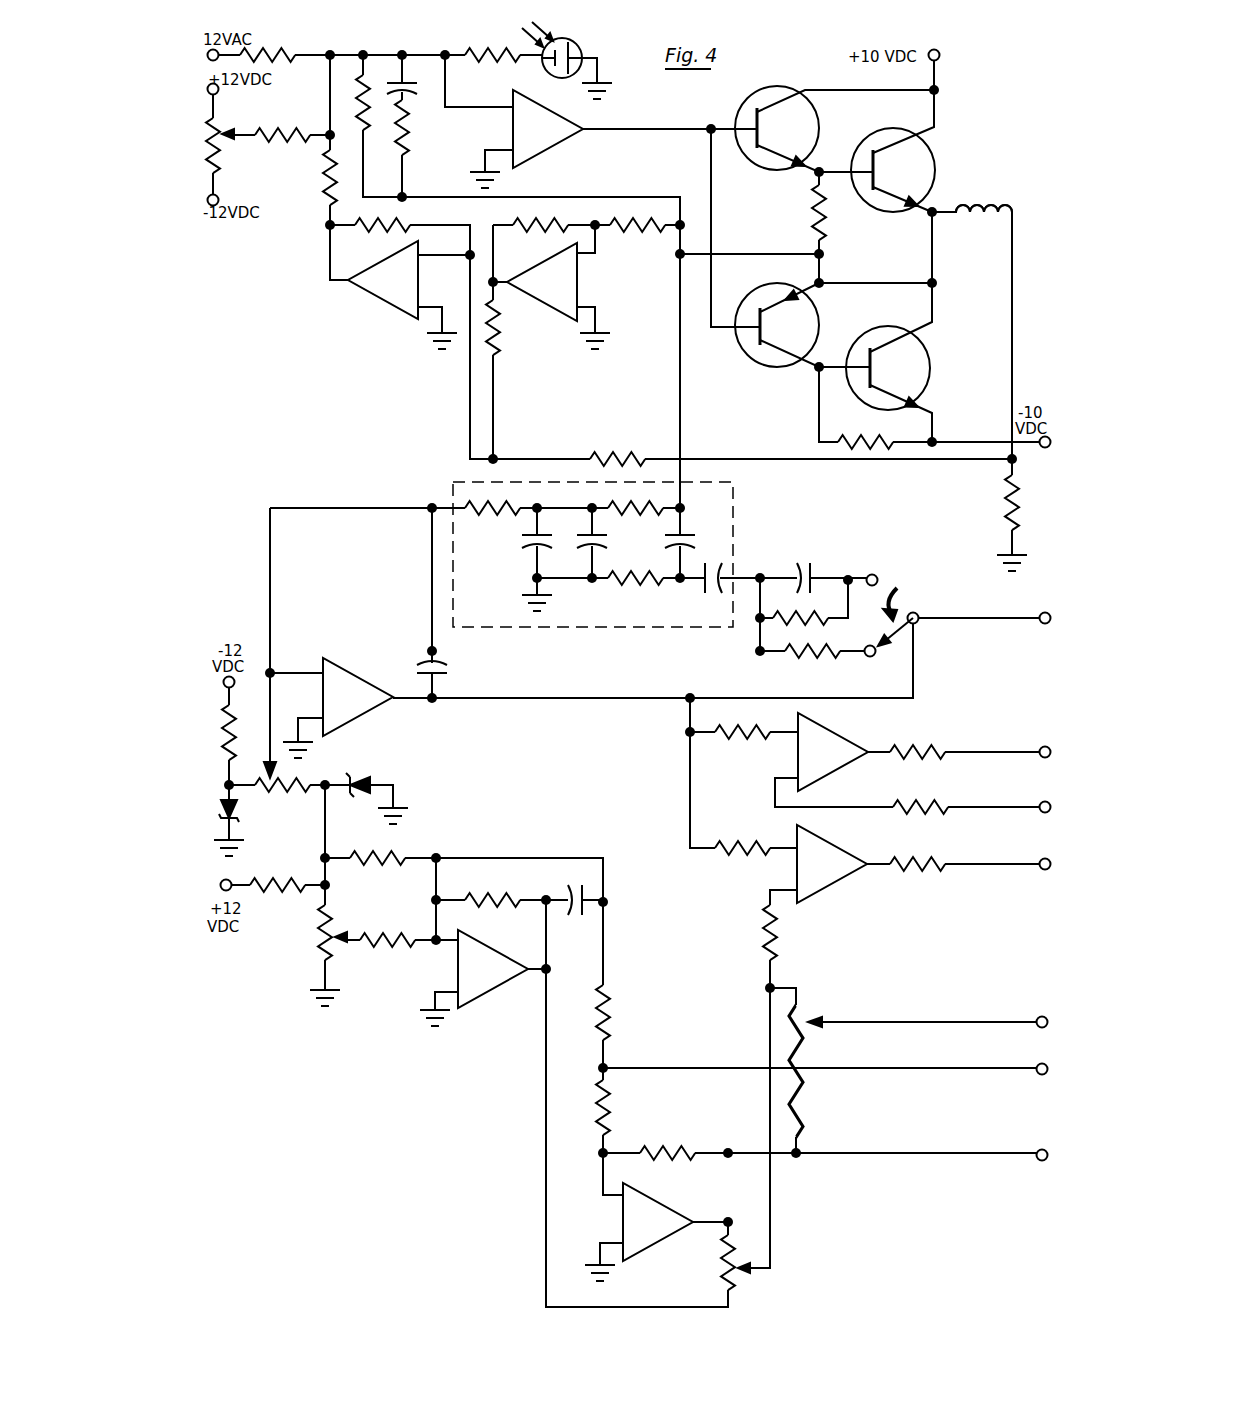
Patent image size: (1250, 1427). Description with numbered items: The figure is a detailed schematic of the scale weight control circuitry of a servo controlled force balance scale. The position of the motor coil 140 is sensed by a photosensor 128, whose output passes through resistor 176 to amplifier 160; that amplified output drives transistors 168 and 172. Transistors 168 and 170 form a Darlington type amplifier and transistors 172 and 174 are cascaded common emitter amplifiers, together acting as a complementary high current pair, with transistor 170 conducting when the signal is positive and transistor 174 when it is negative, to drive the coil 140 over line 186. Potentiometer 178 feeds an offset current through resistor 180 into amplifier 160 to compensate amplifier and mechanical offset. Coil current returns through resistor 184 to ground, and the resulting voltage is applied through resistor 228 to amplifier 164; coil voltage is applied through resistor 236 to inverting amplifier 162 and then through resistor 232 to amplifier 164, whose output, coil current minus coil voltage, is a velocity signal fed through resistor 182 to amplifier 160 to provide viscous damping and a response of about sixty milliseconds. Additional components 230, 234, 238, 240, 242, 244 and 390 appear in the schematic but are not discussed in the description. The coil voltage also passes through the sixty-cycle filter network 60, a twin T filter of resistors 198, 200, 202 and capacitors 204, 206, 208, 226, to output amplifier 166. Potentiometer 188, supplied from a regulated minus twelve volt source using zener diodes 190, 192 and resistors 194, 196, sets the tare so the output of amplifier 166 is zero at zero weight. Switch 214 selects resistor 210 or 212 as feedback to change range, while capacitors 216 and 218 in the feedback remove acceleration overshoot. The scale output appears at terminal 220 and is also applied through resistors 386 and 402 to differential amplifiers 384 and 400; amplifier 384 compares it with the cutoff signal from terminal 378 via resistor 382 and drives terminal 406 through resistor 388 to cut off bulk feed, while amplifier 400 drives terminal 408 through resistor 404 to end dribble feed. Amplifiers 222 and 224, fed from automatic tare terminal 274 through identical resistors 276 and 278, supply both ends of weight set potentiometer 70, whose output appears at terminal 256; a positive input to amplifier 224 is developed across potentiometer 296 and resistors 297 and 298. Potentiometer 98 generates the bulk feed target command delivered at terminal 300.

The filter network 60 is at (457, 482).
The weight set potentiometer 70 is at (733, 1277).
The potentiometer 98 is at (805, 1036).
The photosensor 128 is at (574, 39).
The motor coil 140 is at (1006, 198).
The operational amplifier 160 is at (550, 146).
The operational amplifier 162 is at (580, 282).
The operational amplifier 164 is at (366, 290).
The output amplifier 166 is at (364, 674).
The transistor 168 is at (734, 118).
The transistor 170 is at (864, 138).
The transistor 172 is at (742, 356).
The transistor 174 is at (930, 353).
The resistor 176 is at (480, 46).
The potentiometer 178 is at (218, 156).
The resistor 180 is at (287, 140).
The resistor 182 is at (322, 180).
The resistor 184 is at (1002, 504).
The line 186 is at (903, 280).
The potentiometer 188 is at (262, 792).
The zener diode 190 is at (235, 828).
The zener diode 192 is at (359, 776).
The resistor 194 is at (250, 710).
The resistor 196 is at (299, 896).
The resistor 198 is at (613, 504).
The resistor 200 is at (508, 516).
The resistor 202 is at (629, 580).
The capacitor 204 is at (706, 591).
The capacitor 206 is at (607, 531).
The capacitor 208 is at (530, 550).
The resistor 210 is at (800, 658).
The resistor 212 is at (815, 620).
The switch 214 is at (903, 608).
The capacitor 216 is at (441, 672).
The capacitor 218 is at (813, 576).
The terminal 220 is at (1044, 622).
The amplifier 222 is at (658, 1240).
The amplifier 224 is at (484, 996).
The capacitor 226 is at (700, 527).
The resistor 228 is at (603, 452).
The resistor 230 is at (868, 428).
The resistor 232 is at (515, 348).
The resistor 234 is at (524, 220).
The resistor 236 is at (621, 216).
The resistor 238 is at (304, 52).
The capacitor 240 is at (406, 94).
The resistor 242 is at (408, 162).
The resistor 244 is at (351, 109).
The terminal 256 is at (1036, 1162).
The terminal 274 is at (1038, 1080).
The resistor 276 is at (608, 1086).
The resistor 278 is at (605, 997).
The potentiometer 296 is at (318, 936).
The resistor 297 is at (400, 858).
The resistor 298 is at (396, 949).
The terminal 300 is at (1041, 1015).
The terminal 378 is at (1041, 804).
The resistor 382 is at (935, 814).
The differential amplifier 384 is at (860, 734).
The resistor 386 is at (743, 746).
The resistor 388 is at (928, 748).
The resistor 390 is at (763, 928).
The differential amplifier 400 is at (850, 888).
The resistor 402 is at (721, 852).
The resistor 404 is at (920, 874).
The terminal 406 is at (1039, 750).
The terminal 408 is at (1042, 868).